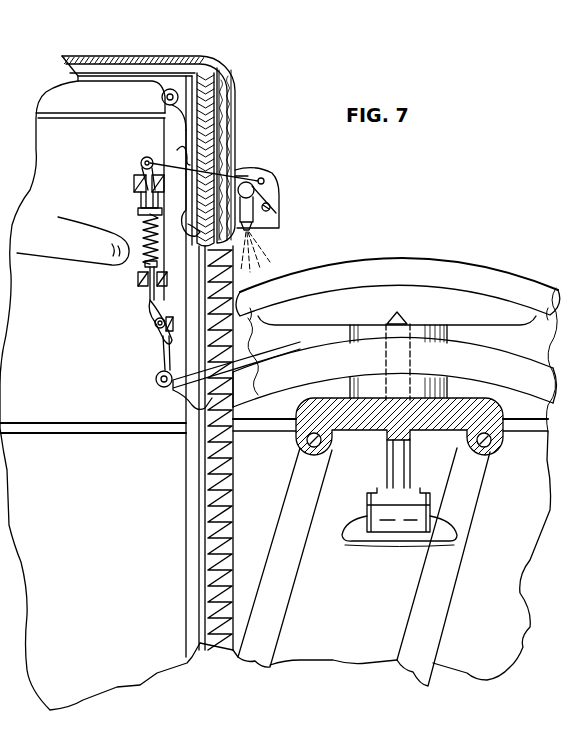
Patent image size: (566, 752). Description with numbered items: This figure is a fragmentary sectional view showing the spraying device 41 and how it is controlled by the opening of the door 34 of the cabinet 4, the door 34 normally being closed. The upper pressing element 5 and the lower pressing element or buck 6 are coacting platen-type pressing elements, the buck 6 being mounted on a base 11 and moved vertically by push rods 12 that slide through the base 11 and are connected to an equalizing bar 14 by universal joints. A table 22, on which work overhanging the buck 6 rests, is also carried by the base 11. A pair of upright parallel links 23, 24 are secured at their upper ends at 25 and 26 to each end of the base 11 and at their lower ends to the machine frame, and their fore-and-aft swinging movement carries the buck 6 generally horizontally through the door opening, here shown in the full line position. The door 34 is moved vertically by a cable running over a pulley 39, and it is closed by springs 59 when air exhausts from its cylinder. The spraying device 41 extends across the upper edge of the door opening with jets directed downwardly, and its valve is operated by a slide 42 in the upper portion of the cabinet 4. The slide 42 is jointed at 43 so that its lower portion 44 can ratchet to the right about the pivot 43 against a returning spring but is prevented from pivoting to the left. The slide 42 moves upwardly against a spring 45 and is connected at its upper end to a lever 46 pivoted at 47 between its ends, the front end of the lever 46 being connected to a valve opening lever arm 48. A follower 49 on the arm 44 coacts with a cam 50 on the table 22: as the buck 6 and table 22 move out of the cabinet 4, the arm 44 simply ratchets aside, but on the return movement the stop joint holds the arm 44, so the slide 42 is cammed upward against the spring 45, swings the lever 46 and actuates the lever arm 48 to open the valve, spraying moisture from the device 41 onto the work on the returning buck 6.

The cabinet 4 is at (236, 82).
The door 34 is at (214, 130).
The pulley 39 is at (162, 95).
The pivot 47 is at (185, 152).
The lever 46 is at (140, 160).
The slide 42 is at (140, 201).
The spring 45 is at (146, 222).
The upper pressing element 5 is at (62, 221).
The pivot 43 is at (150, 322).
The lower portion 44 is at (163, 358).
The follower 49 is at (160, 387).
The springs 59 is at (200, 472).
The spraying device 41 is at (284, 167).
The valve opening lever arm 48 is at (283, 188).
The lower pressing element 6 is at (508, 286).
The table 22 is at (480, 360).
The cam 50 is at (287, 350).
The upper end securing point of link 25 is at (300, 437).
The upper end securing point of link 26 is at (497, 440).
The push rods 12 is at (388, 456).
The base 11 is at (430, 418).
The equalizing bar 14 is at (359, 522).
The link 23 is at (290, 572).
The link 24 is at (420, 611).